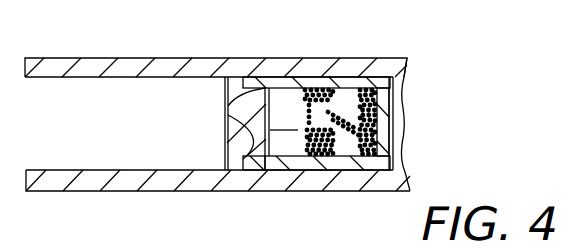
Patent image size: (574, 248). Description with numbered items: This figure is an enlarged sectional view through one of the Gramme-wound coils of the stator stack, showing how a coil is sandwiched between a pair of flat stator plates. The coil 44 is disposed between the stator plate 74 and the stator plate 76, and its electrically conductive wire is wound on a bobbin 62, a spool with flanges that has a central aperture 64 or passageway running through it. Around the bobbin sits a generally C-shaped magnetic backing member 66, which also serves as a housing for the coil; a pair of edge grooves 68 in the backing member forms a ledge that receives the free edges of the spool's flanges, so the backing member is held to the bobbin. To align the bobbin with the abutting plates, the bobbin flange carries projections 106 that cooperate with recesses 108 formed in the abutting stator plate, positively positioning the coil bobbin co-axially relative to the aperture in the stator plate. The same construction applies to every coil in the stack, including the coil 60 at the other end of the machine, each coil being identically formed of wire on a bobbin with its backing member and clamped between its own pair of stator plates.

The coil 44 is at (287, 114).
The coil 60 is at (329, 93).
The bobbin 62 is at (333, 78).
The central aperture 64 is at (428, 124).
The magnetic backing member 66 is at (214, 123).
The edge grooves 68 is at (219, 123).
The stator plate 74 is at (216, 47).
The stator plate 76 is at (218, 158).
The projections 106 is at (327, 192).
The recesses 108 is at (303, 122).